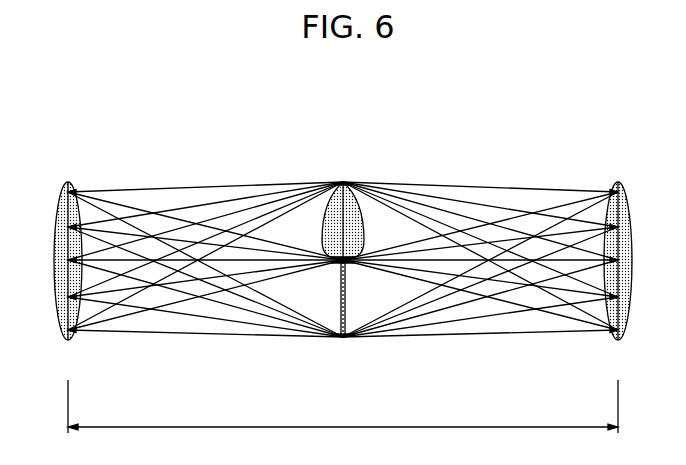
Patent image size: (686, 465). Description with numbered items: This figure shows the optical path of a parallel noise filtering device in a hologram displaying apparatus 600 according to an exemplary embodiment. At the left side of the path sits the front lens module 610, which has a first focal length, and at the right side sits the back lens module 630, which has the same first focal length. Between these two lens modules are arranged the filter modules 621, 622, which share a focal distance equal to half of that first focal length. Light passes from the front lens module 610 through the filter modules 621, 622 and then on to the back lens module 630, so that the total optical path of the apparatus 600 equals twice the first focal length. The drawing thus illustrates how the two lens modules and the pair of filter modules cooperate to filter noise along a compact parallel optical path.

The hologram displaying apparatus 600 is at (329, 112).
The front lens module 610 is at (56, 207).
The filter module 621 is at (358, 210).
The filter module 622 is at (343, 328).
The back lens module 630 is at (632, 204).